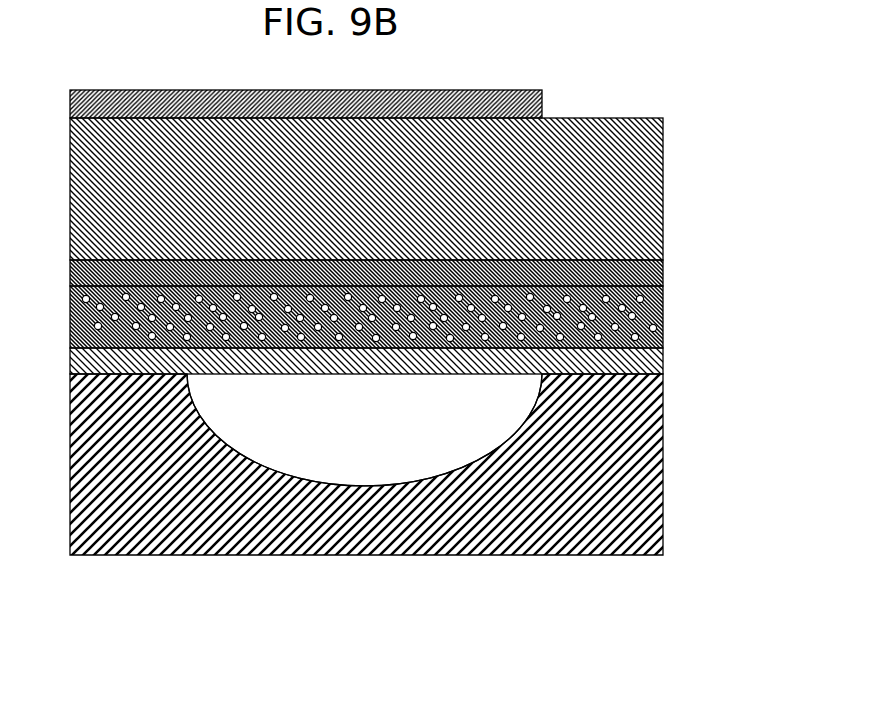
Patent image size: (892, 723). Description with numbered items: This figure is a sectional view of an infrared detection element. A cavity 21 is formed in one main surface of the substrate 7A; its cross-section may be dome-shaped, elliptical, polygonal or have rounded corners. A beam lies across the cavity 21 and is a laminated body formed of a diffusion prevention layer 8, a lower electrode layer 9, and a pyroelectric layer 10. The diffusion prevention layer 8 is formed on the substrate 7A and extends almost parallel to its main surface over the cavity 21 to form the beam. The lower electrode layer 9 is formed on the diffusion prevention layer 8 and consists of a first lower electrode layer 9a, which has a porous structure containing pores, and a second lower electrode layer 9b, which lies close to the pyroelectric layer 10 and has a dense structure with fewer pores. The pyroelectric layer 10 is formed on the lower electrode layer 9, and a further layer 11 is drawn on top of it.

The upper electrode 11 is at (545, 105).
The pyroelectric layer 10 is at (663, 178).
The lower electrode layer 9 is at (369, 303).
The second lower electrode layer 9b is at (65, 259).
The first lower electrode layer 9a is at (65, 287).
The diffusion prevention layer 8 is at (663, 372).
The substrate 7A is at (663, 481).
The cavity 21 is at (242, 408).